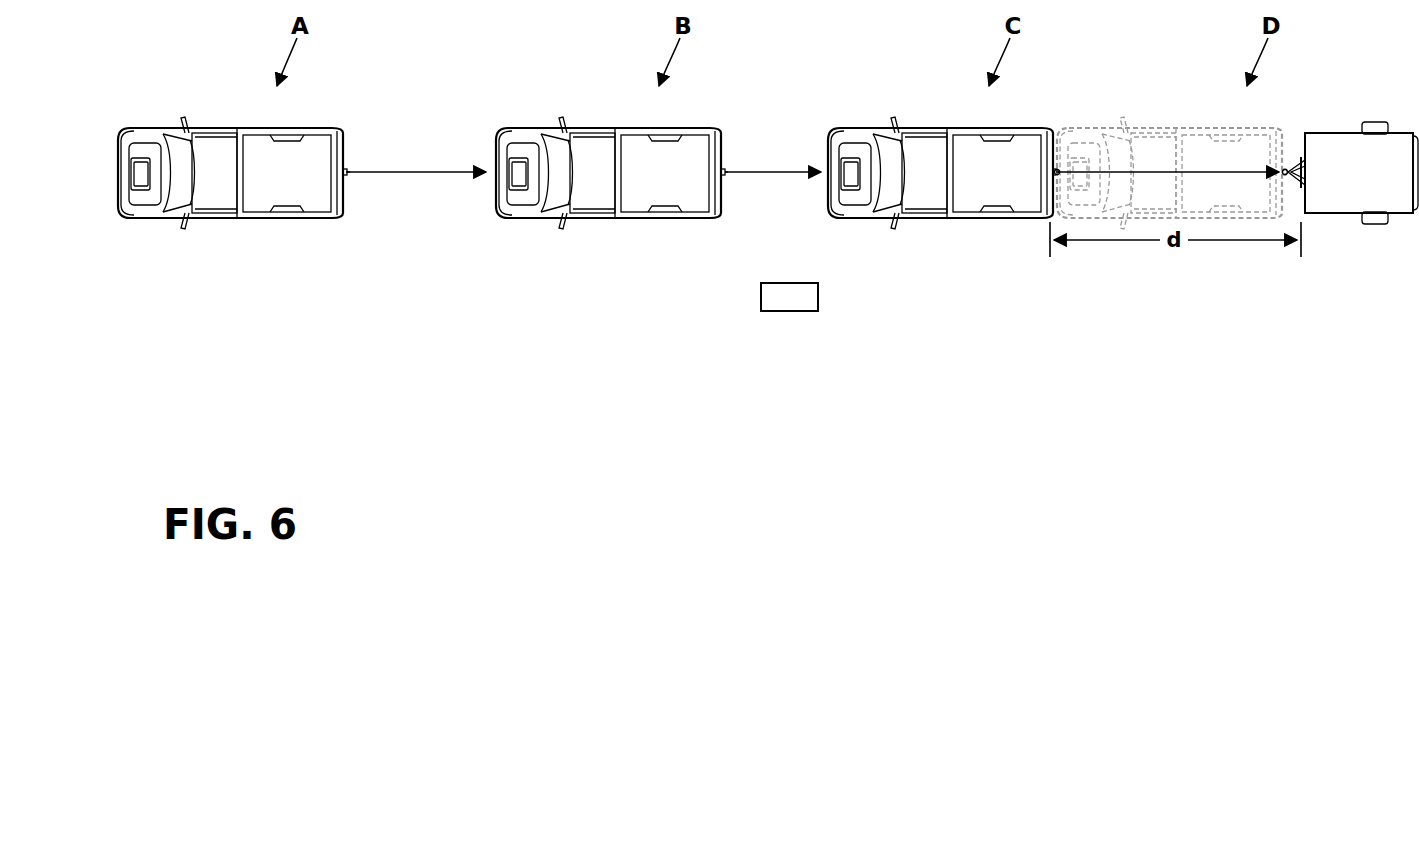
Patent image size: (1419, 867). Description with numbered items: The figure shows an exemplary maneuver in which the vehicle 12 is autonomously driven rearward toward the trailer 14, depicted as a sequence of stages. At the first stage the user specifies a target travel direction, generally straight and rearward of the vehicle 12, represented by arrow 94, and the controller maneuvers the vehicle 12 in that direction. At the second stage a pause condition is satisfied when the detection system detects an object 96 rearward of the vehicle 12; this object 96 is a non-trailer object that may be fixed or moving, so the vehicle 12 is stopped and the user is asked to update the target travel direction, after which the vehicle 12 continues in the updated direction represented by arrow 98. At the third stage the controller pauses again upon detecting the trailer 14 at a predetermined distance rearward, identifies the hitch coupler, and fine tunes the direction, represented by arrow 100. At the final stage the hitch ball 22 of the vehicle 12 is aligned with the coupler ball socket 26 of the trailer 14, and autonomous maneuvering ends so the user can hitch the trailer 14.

The vehicle 12 is at (203, 124).
The trailer 14 is at (1338, 192).
The hitch ball 22 is at (1058, 165).
The coupler ball socket 26 is at (1287, 178).
The arrow 94 is at (405, 168).
The object 96 is at (791, 311).
The arrow 98 is at (767, 168).
The arrow 100 is at (1110, 165).